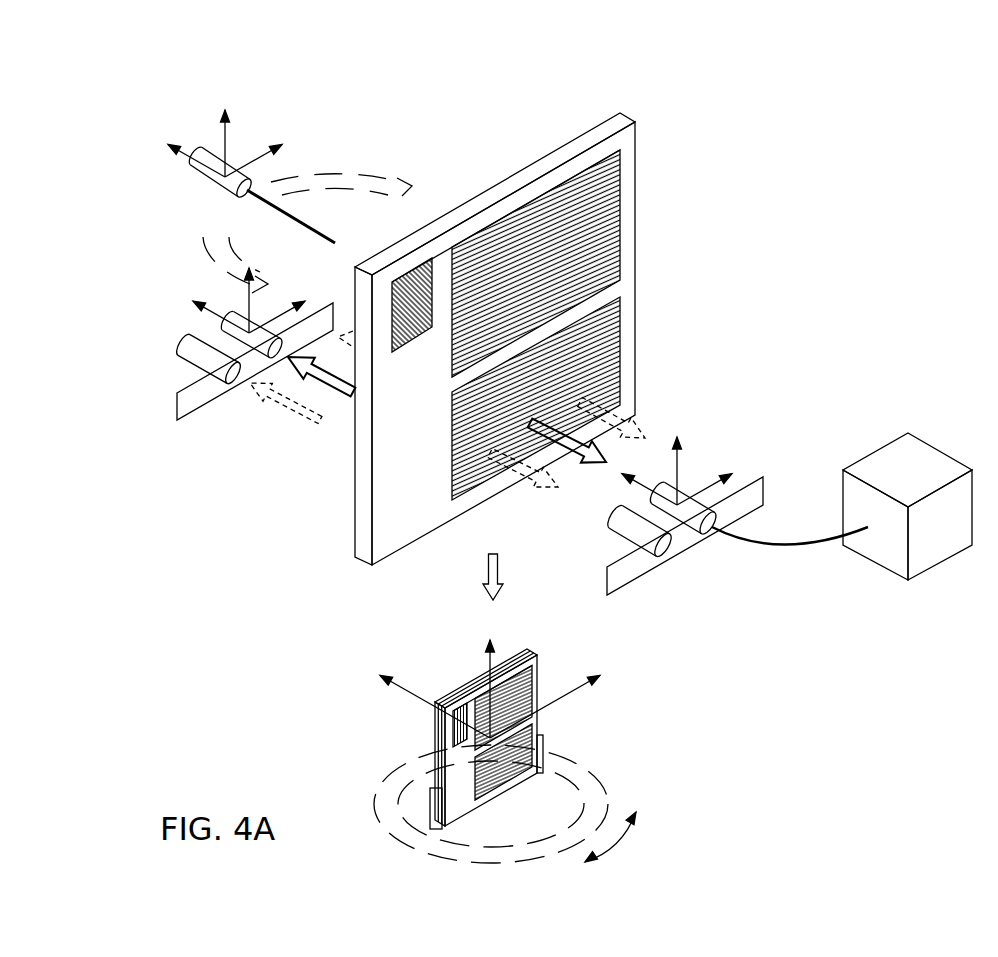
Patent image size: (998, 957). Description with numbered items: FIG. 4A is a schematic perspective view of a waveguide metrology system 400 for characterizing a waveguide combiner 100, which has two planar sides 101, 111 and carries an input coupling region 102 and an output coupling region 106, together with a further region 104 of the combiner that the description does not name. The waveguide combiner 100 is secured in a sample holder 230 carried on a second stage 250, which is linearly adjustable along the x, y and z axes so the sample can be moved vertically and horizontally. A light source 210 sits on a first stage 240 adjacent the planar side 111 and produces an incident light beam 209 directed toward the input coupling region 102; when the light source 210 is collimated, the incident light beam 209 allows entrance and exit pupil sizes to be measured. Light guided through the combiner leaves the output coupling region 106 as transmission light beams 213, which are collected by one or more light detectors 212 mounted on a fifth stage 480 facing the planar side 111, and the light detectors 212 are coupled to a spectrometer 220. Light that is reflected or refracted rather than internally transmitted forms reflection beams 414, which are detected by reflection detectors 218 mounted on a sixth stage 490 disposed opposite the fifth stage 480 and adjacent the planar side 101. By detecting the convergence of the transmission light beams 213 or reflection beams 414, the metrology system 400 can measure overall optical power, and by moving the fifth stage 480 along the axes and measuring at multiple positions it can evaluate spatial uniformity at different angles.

The waveguide combiner 100 is at (657, 137).
The planar side 101 is at (380, 538).
The input coupling region 102 is at (392, 298).
The upper mesh opening 104 is at (622, 206).
The output coupling region 106 is at (620, 323).
The planar side 111 is at (340, 508).
The incident light beam 209 is at (292, 214).
The light source 210 is at (205, 180).
The light detectors 212 is at (670, 558).
The transmission light beams 213 is at (626, 404).
The reflection detectors 218 is at (222, 325).
The spectrometer 220 is at (923, 482).
The sample holder 230 is at (432, 810).
The first stage 240 is at (208, 222).
The second stage 250 is at (597, 770).
The metrology system 400 is at (382, 120).
The reflection beams 414 is at (350, 400).
The fifth stage 480 is at (632, 582).
The sixth stage 490 is at (192, 418).